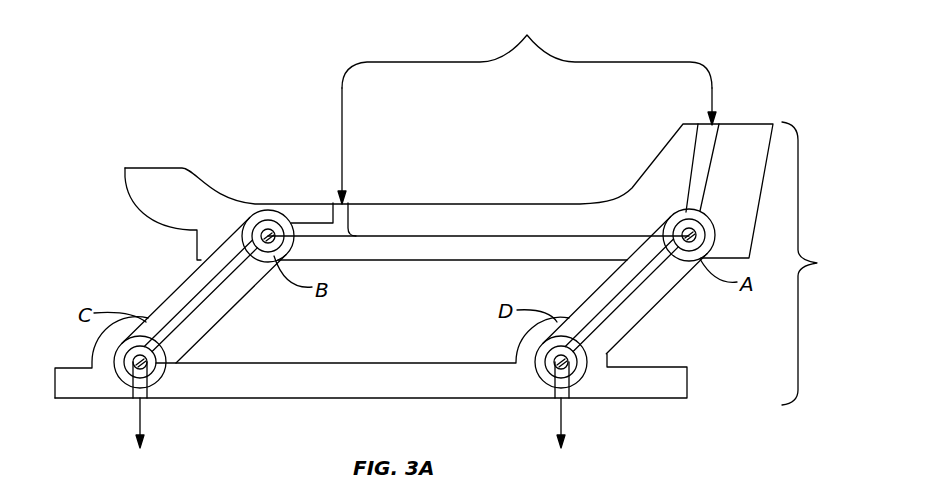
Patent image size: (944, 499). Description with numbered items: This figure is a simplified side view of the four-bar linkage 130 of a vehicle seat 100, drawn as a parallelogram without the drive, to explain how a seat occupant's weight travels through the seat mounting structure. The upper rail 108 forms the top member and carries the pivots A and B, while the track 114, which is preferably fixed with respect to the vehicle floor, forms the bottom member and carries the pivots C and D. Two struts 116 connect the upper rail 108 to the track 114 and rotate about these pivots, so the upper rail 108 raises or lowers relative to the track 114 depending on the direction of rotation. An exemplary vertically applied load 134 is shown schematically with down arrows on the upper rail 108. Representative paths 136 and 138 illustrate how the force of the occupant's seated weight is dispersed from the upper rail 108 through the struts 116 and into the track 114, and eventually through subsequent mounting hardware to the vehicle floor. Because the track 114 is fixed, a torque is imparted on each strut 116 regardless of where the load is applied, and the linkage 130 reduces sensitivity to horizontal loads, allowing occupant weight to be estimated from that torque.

The vehicle seat 100 is at (287, 73).
The upper rail 108 is at (183, 178).
The track 114 is at (83, 372).
The struts 116 is at (182, 292).
The four-bar linkage 130 is at (823, 263).
The vertically applied load 134 is at (528, 111).
The representative path 136 is at (194, 322).
The representative path 138 is at (612, 322).